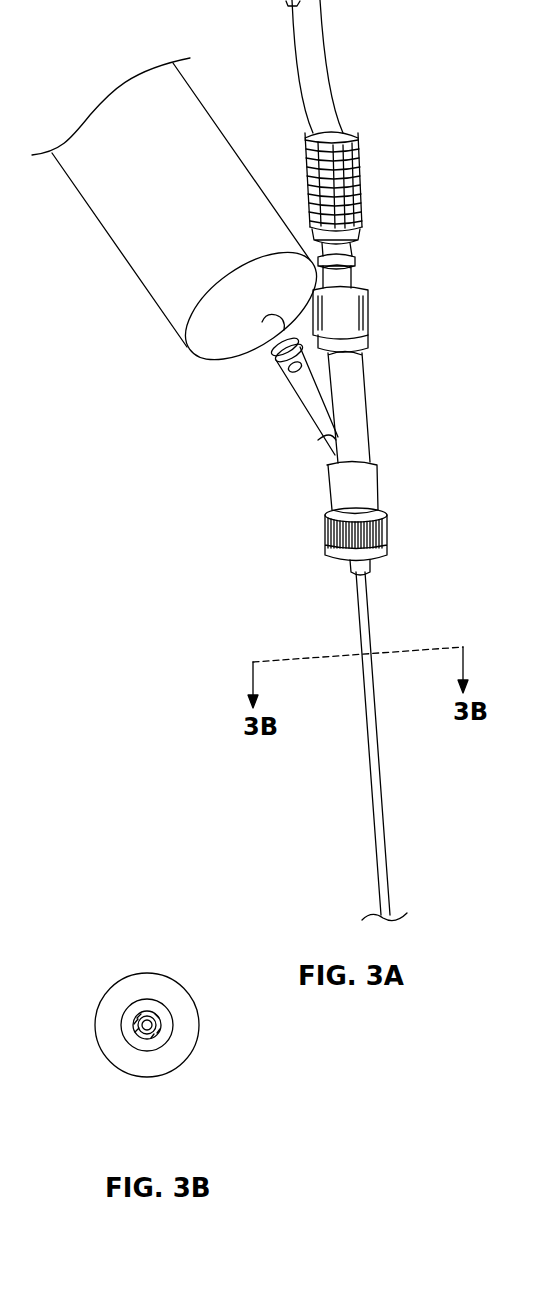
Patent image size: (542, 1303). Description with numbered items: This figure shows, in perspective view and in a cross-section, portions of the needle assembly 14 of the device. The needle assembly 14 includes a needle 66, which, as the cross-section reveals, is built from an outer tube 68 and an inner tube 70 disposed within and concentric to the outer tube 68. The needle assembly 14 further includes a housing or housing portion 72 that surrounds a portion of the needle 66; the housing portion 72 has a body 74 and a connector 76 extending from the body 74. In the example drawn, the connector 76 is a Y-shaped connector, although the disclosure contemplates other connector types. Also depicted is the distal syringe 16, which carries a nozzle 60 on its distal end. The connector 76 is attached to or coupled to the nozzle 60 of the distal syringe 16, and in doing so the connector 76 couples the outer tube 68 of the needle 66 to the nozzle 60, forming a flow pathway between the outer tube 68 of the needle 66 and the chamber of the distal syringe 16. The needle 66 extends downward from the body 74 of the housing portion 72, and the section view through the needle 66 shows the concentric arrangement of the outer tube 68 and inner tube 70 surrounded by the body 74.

In FIG. 3A, the needle assembly 14 is at (420, 55).
In FIG. 3A, the distal syringe 16 is at (130, 222).
In FIG. 3A, the nozzle 60 is at (240, 352).
In FIG. 3A, the needle 66 is at (380, 775).
In FIG. 3B, the needle 66 is at (132, 1044).
In FIG. 3B, the outer tube 68 is at (160, 1028).
In FIG. 3B, the inner tube 70 is at (153, 1023).
In FIG. 3A, the housing portion 72 is at (402, 472).
In FIG. 3A, the body 74 is at (378, 535).
In FIG. 3B, the body 74 is at (98, 1005).
In FIG. 3A, the connector 76 is at (367, 407).